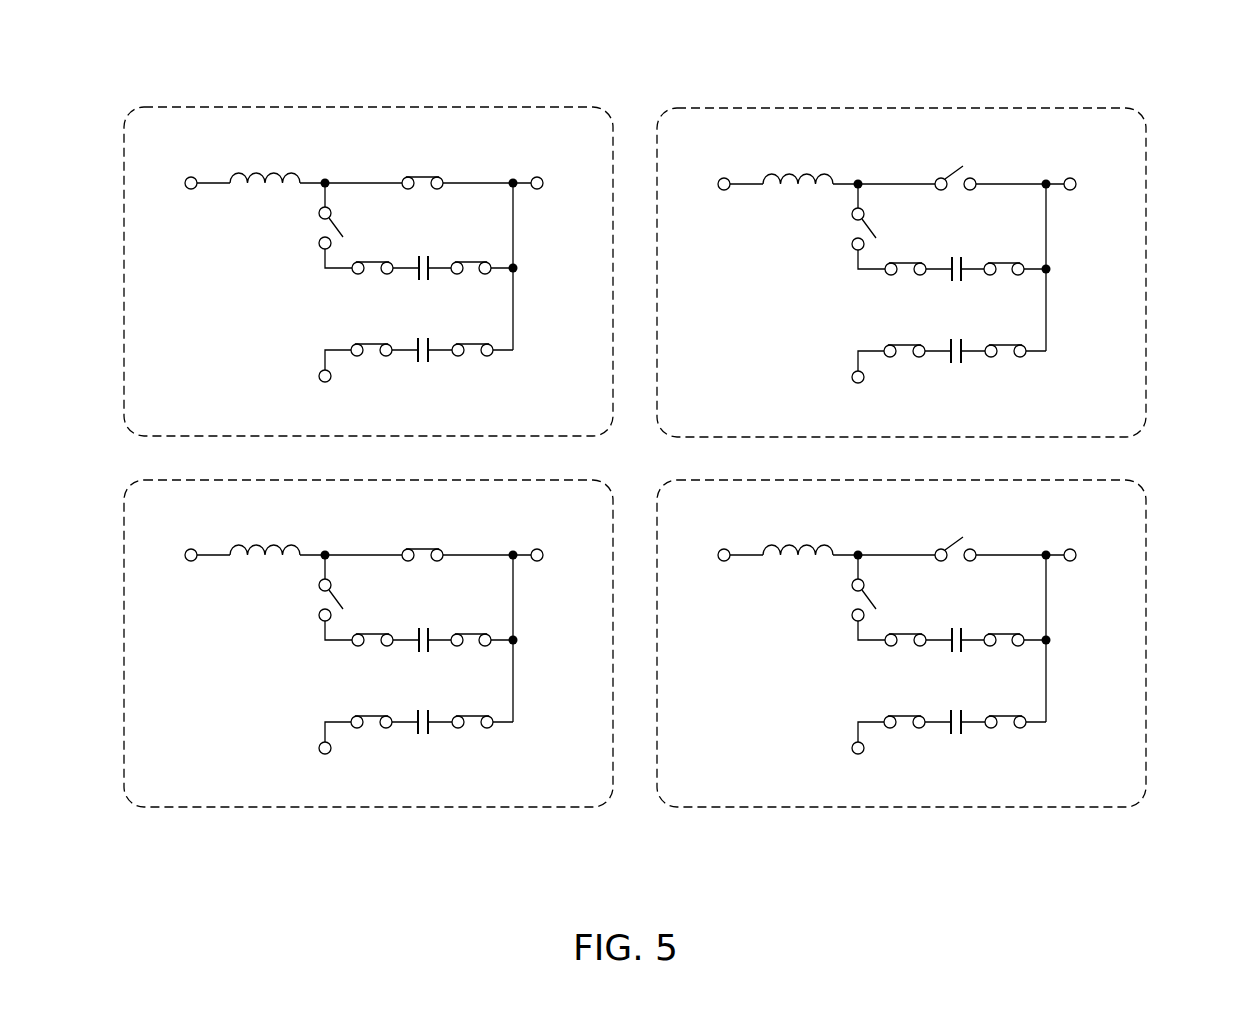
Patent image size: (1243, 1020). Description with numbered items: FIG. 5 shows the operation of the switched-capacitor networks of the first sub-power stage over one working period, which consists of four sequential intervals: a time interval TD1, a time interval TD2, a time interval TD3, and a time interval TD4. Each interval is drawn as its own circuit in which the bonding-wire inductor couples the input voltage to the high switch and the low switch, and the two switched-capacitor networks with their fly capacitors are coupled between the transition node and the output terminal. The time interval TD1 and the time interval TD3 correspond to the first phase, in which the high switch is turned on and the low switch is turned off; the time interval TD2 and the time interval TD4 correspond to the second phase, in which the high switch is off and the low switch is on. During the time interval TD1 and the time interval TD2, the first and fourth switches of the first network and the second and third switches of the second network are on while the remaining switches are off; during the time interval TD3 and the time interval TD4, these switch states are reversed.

The time interval TD1 is at (95, 88).
The time interval TD2 is at (1160, 88).
The time interval TD3 is at (96, 828).
The time interval TD4 is at (1159, 830).